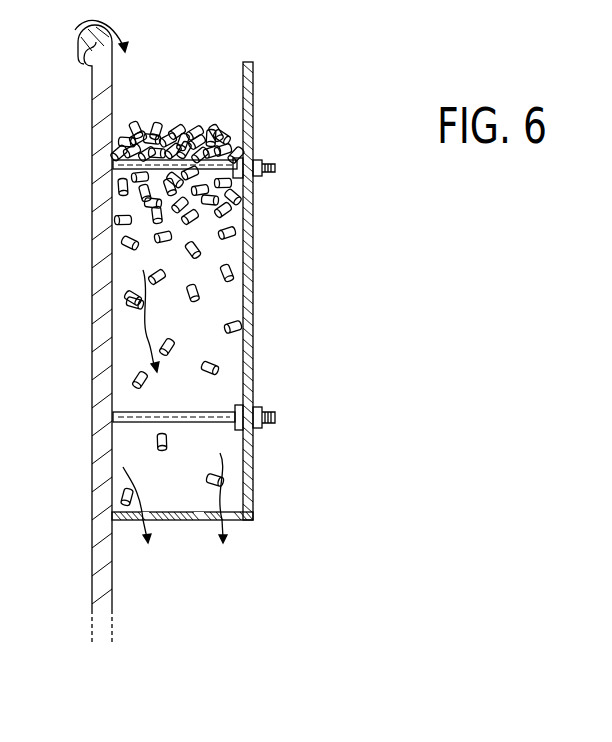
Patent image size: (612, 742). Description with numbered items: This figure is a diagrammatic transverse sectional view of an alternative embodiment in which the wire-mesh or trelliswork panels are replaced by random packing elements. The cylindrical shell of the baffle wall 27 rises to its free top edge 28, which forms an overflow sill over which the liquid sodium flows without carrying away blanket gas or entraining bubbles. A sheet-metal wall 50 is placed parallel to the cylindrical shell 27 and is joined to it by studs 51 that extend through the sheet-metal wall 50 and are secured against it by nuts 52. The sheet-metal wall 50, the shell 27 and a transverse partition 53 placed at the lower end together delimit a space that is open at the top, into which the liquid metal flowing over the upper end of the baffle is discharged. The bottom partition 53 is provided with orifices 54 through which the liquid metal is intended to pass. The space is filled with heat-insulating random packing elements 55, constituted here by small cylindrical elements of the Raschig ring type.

The baffle wall 27 is at (102, 333).
The free top edge 28 is at (90, 45).
The sheet-metal wall 50 is at (253, 302).
The studs 51 is at (130, 163).
The nuts 52 is at (262, 177).
The transverse partition 53 is at (237, 524).
The orifices 54 is at (167, 522).
The heat-insulating random packing elements 55 is at (212, 372).